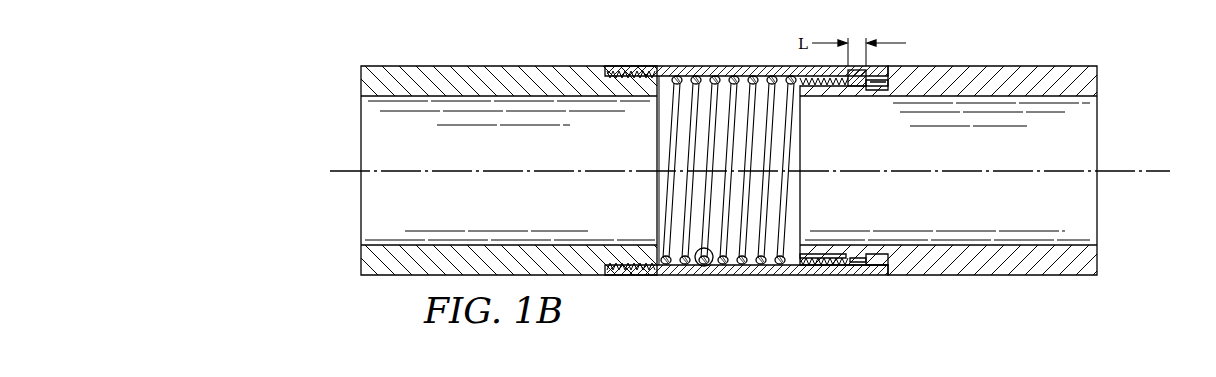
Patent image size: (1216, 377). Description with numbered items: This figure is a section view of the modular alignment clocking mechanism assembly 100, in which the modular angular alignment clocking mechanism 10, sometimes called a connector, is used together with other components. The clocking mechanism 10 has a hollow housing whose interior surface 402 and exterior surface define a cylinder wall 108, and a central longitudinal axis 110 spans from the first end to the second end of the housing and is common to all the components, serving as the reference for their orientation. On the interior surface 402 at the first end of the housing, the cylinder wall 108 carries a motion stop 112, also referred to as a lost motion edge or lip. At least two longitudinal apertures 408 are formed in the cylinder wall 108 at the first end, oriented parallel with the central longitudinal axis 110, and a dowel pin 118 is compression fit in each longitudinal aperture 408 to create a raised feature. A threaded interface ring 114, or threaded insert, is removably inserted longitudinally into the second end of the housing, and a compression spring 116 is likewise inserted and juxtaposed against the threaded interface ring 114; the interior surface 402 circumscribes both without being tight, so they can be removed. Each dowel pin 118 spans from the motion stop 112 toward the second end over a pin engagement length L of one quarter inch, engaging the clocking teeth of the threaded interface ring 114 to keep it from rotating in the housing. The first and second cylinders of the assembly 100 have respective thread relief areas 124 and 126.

The modular angular alignment clocking mechanism 10 is at (888, 62).
The modular alignment clocking mechanism assembly 100 is at (1078, 49).
The cylinder wall 108 is at (748, 275).
The central longitudinal axis 110 is at (1136, 170).
The motion stop 112 is at (875, 92).
The threaded interface ring 114 is at (812, 268).
The compression spring 116 is at (693, 134).
The dowel pin 118 is at (853, 88).
The thread relief area 124 is at (604, 262).
The thread relief area 126 is at (872, 260).
The interior surface 402 is at (694, 266).
The longitudinal aperture 408 is at (878, 268).